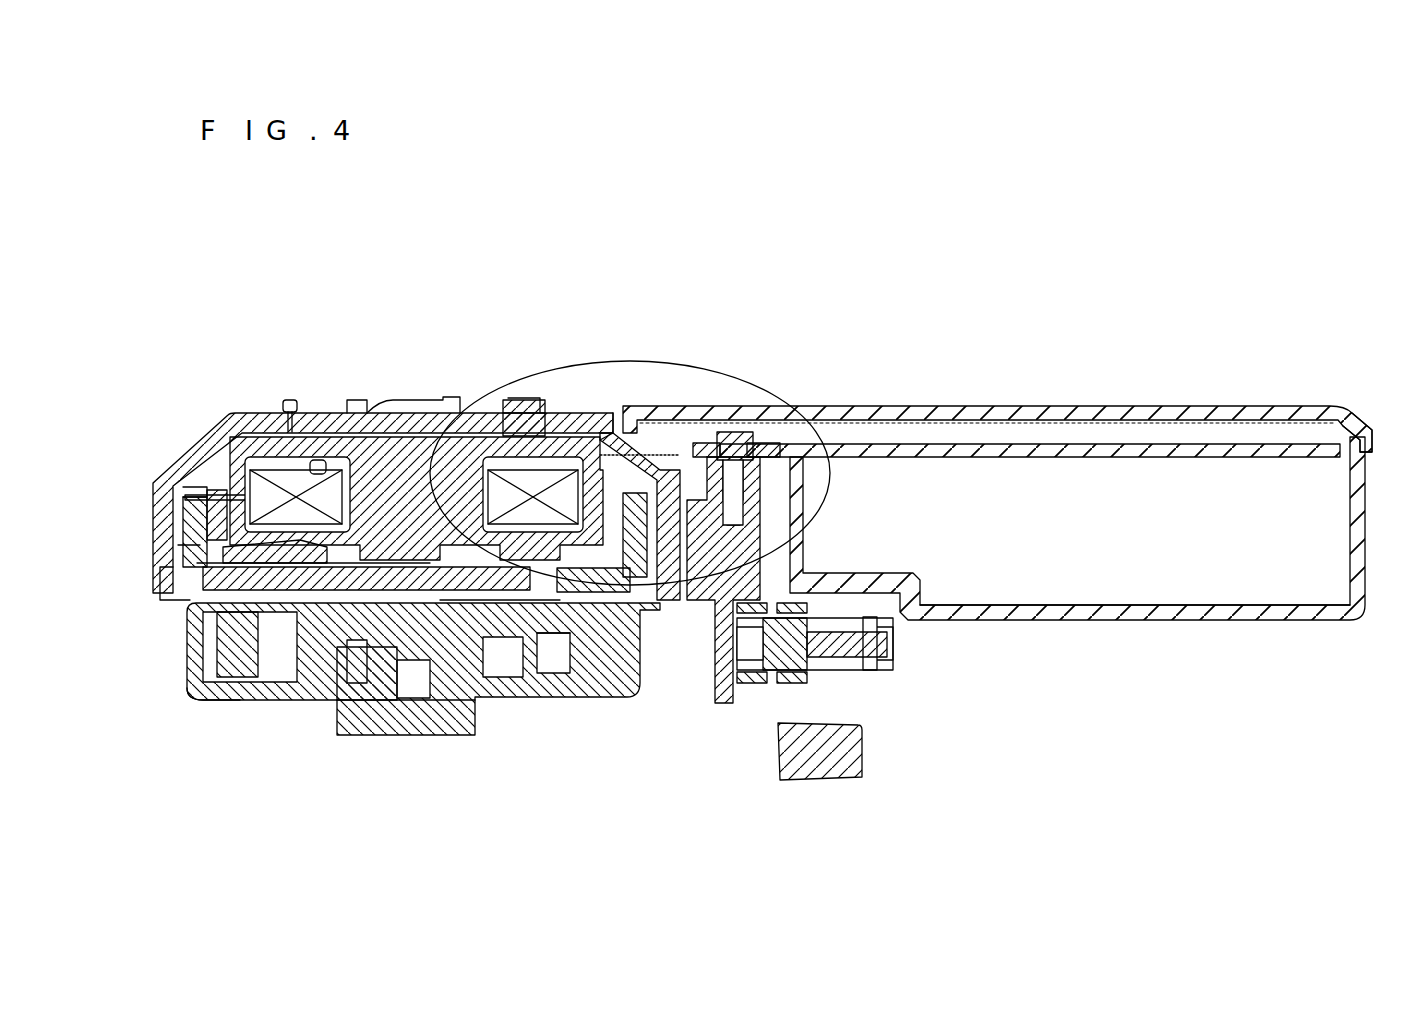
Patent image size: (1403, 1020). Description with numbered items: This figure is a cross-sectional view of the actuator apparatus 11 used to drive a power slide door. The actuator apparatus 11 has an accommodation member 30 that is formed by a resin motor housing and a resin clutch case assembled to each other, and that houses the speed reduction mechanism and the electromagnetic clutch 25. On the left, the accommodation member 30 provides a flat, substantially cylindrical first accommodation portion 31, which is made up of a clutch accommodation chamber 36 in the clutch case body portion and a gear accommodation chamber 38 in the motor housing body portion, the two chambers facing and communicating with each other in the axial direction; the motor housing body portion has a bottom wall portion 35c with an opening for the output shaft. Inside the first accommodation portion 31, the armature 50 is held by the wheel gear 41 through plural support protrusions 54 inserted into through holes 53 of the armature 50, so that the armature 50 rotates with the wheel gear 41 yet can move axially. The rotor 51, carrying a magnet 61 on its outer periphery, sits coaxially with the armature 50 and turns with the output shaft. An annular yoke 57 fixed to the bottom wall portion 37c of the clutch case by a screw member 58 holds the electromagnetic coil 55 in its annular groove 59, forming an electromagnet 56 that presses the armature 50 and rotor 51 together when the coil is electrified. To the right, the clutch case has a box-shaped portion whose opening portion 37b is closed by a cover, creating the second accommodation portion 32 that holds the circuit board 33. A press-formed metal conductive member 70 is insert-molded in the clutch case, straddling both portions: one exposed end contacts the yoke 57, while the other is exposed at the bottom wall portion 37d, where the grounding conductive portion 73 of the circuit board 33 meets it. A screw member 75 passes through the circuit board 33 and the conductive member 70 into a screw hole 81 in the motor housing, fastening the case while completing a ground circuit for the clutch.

The actuator apparatus 11 is at (322, 230).
The accommodation member 30 is at (230, 392).
The first accommodation portion 31 is at (420, 410).
The second accommodation portion 32 is at (1137, 623).
The circuit board 33 is at (1110, 457).
The clutch accommodation chamber 36 is at (198, 455).
The opening portion 37b is at (1352, 418).
The bottom wall portion 37c is at (595, 415).
The bottom wall portion 37d is at (1080, 605).
The gear accommodation chamber 38 is at (205, 692).
The wheel gear 41 is at (205, 628).
The armature 50 is at (345, 660).
The rotor 51 is at (445, 548).
The through holes 53 is at (288, 592).
The support protrusions 54 is at (300, 543).
The electromagnetic coil 55 is at (250, 498).
The electromagnet 56 is at (205, 451).
The yoke 57 is at (602, 425).
The screw member 58 is at (522, 398).
The annular groove 59 is at (318, 458).
The magnet 61 is at (178, 545).
The conductive member 70 is at (630, 440).
The grounding conductive portion 73 is at (755, 440).
The screw member 75 is at (728, 430).
The screw hole 81 is at (745, 505).
The electromagnetic clutch 25 is at (506, 606).
The bottom wall portion 35c is at (530, 697).